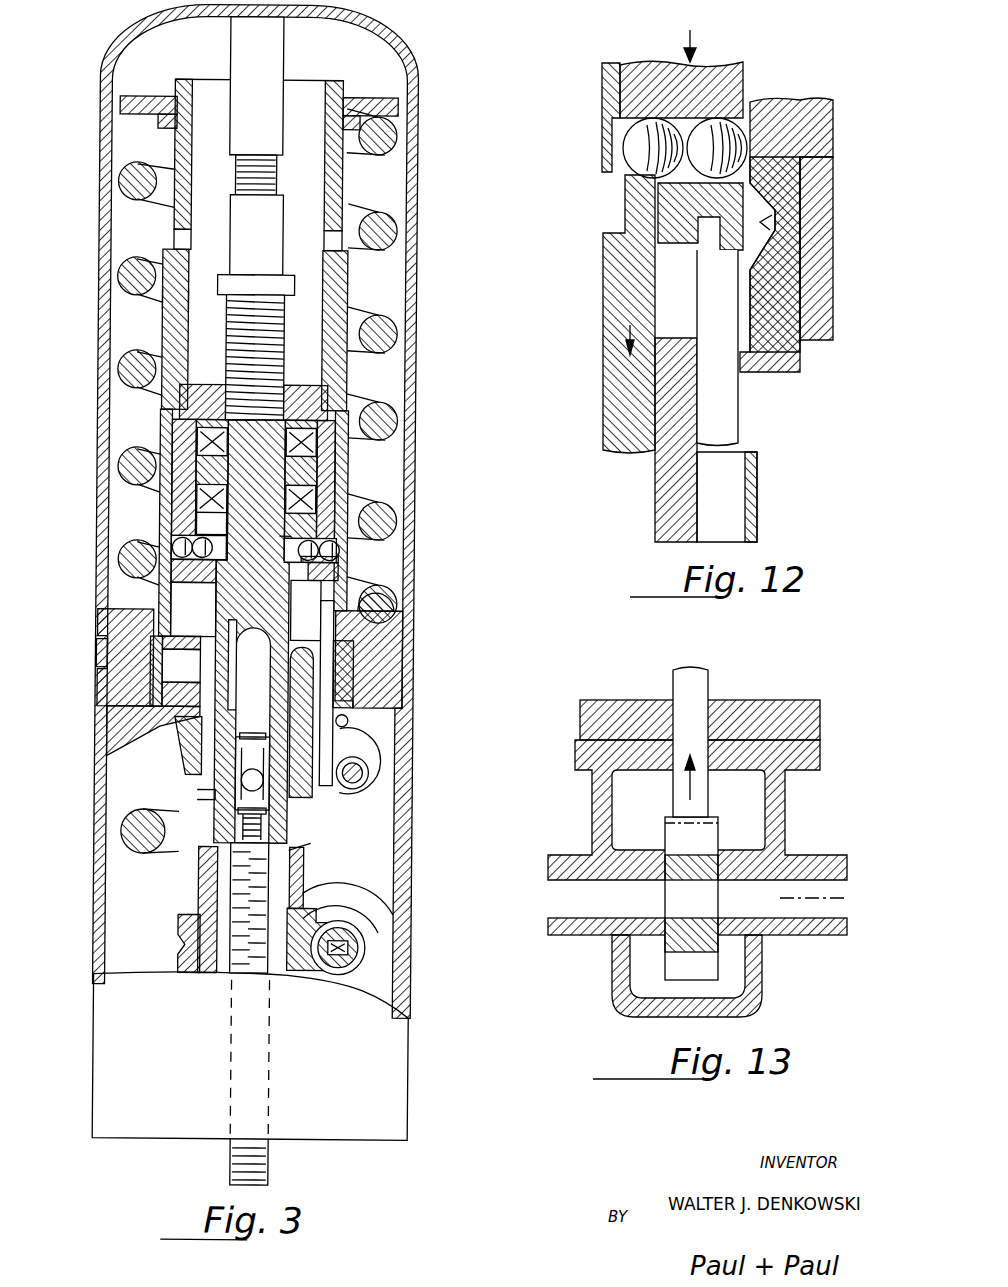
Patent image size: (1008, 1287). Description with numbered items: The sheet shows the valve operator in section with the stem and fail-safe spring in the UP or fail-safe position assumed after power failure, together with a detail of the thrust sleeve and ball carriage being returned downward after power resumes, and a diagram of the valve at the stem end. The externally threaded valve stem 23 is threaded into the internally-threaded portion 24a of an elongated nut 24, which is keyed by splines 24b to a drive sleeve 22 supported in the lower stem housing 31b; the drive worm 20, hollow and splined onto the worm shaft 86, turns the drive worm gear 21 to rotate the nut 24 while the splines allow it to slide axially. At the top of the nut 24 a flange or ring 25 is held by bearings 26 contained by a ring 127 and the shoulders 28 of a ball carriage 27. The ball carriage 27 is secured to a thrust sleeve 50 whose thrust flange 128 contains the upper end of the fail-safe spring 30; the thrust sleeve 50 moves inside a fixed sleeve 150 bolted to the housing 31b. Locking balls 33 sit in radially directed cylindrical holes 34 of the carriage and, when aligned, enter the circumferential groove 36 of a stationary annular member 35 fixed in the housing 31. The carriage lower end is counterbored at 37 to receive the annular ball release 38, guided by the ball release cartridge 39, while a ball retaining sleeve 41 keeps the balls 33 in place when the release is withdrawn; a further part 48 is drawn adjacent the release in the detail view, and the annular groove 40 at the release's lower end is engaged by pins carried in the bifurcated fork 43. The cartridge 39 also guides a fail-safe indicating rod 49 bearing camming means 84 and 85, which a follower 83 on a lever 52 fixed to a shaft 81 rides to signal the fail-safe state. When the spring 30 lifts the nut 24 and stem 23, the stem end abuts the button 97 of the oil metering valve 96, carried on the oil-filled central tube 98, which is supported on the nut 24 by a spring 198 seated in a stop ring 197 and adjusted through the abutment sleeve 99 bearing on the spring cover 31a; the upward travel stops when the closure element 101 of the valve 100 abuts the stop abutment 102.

In FIG. 3, the drive worm 20 is at (372, 930).
In FIG. 3, the drive worm gear 21 is at (180, 935).
In FIG. 3, the drive sleeve 22 is at (202, 887).
In FIG. 3, the valve stem 23 is at (240, 862).
In FIG. 13, the valve stem 23 is at (680, 686).
In FIG. 3, the nut 24 is at (278, 603).
In FIG. 3, the internally-threaded portion 24a is at (292, 862).
In FIG. 3, the splines 24b is at (302, 882).
In FIG. 3, the flange or ring 25 is at (303, 460).
In FIG. 3, the bearings 26 is at (182, 430).
In FIG. 3, the ball carriage 27 is at (330, 532).
In FIG. 12, the ball carriage 27 is at (730, 80).
In FIG. 3, the shoulders 28 is at (195, 522).
In FIG. 3, the fail-safe spring 30 is at (381, 232).
In FIG. 12, the housing 31 is at (820, 275).
In FIG. 3, the spring cover 31a is at (471, 141).
In FIG. 3, the lower stem housing 31b is at (140, 1012).
In FIG. 13, the lower stem housing 31b is at (772, 712).
In FIG. 3, the locking balls 33 is at (176, 545).
In FIG. 12, the locking balls 33 is at (640, 148).
In FIG. 3, the radially directed cylindrical holes 34 is at (322, 556).
In FIG. 3, the stationary annular member 35 is at (155, 660).
In FIG. 12, the stationary annular member 35 is at (790, 182).
In FIG. 3, the circumferential groove 36 is at (150, 676).
In FIG. 12, the circumferential groove 36 is at (775, 228).
In FIG. 3, the counterbore 37 is at (194, 597).
In FIG. 3, the ball release 38 is at (321, 730).
In FIG. 12, the ball release 38 is at (630, 275).
In FIG. 3, the ball release cartridge 39 is at (186, 750).
In FIG. 12, the ball release cartridge 39 is at (675, 483).
In FIG. 3, the annular groove 40 is at (198, 782).
In FIG. 3, the ball retaining sleeve 41 is at (283, 541).
In FIG. 12, the ball retaining sleeve 41 is at (608, 107).
In FIG. 3, the bifurcated fork 43 is at (180, 822).
In FIG. 3, the ball seat block 48 is at (192, 648).
In FIG. 12, the ball seat block 48 is at (650, 200).
In FIG. 3, the fail-safe indicating rod 49 is at (327, 624).
In FIG. 12, the fail-safe indicating rod 49 is at (727, 423).
In FIG. 3, the thrust sleeve 50 is at (170, 215).
In FIG. 3, the lever 52 is at (370, 748).
In FIG. 3, the shaft 81 is at (364, 773).
In FIG. 3, the follower 83 is at (350, 720).
In FIG. 3, the camming means 84 is at (385, 625).
In FIG. 12, the camming means 84 is at (722, 325).
In FIG. 3, the camming means 85 is at (358, 786).
In FIG. 3, the worm shaft 86 is at (367, 950).
In FIG. 3, the oil metering valve 96 is at (270, 820).
In FIG. 3, the button 97 is at (268, 840).
In FIG. 3, the central tube 98 is at (228, 224).
In FIG. 3, the abutment sleeve 99 is at (270, 52).
In FIG. 13, the valve 100 is at (600, 830).
In FIG. 13, the closure element 101 is at (680, 838).
In FIG. 13, the stop abutment 102 is at (740, 777).
In FIG. 3, the ring 127 is at (328, 402).
In FIG. 3, the thrust flange 128 is at (390, 105).
In FIG. 3, the fixed sleeve 150 is at (157, 315).
In FIG. 3, the stop ring 197 is at (284, 278).
In FIG. 3, the spring 198 is at (278, 320).